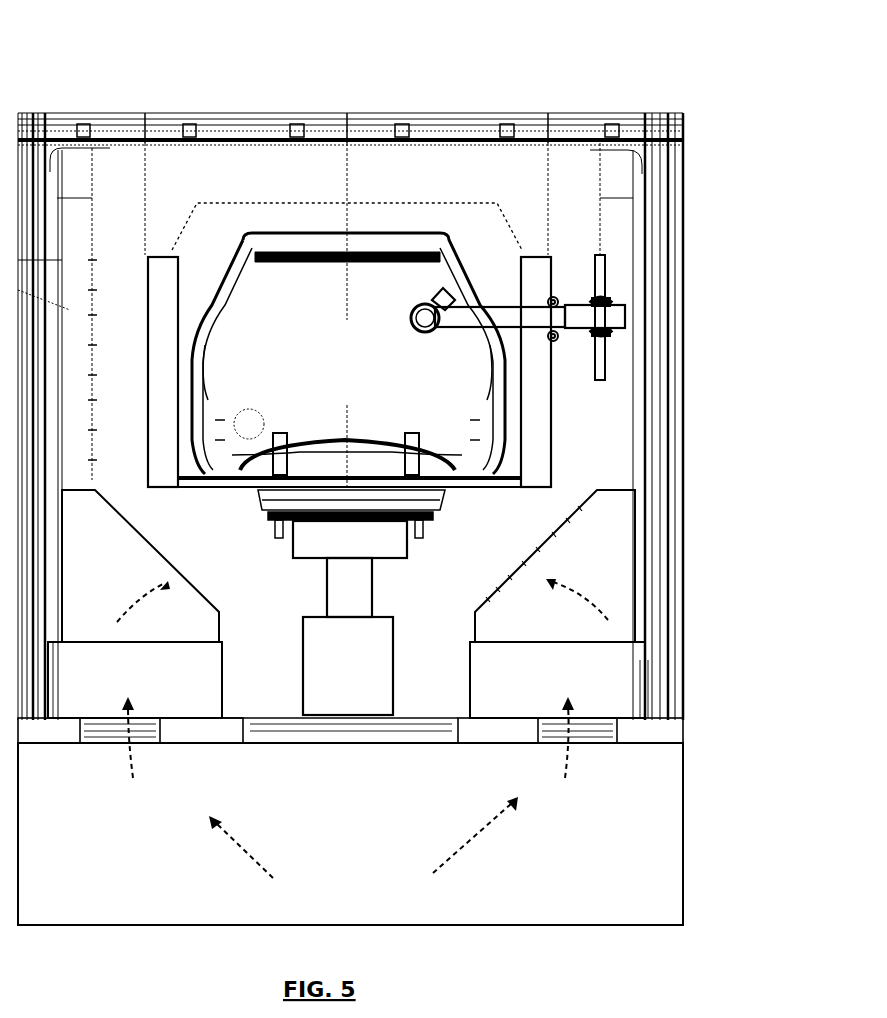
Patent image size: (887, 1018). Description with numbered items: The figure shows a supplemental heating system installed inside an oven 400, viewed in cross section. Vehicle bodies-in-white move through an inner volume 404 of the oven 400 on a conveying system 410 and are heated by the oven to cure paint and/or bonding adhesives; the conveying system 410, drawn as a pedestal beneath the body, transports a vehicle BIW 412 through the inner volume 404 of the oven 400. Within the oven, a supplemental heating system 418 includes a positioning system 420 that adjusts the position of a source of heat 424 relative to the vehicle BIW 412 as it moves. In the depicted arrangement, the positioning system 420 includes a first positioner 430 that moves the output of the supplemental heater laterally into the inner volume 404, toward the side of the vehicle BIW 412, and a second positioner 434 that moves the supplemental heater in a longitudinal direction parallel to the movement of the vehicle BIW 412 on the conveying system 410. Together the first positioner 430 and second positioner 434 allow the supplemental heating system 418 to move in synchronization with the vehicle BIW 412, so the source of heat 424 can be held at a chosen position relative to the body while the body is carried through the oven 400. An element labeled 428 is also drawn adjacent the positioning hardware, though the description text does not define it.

The oven 400 is at (126, 55).
The inner volume 404 is at (244, 156).
The conveying system 410 is at (295, 550).
The vehicle BIW 412 is at (300, 236).
The supplemental heating system 418 is at (414, 295).
The positioning system 420 is at (503, 247).
The source of heat 424 is at (432, 294).
The mounting bracket 428 is at (578, 302).
The first positioner 430 is at (568, 350).
The second positioner 434 is at (626, 298).